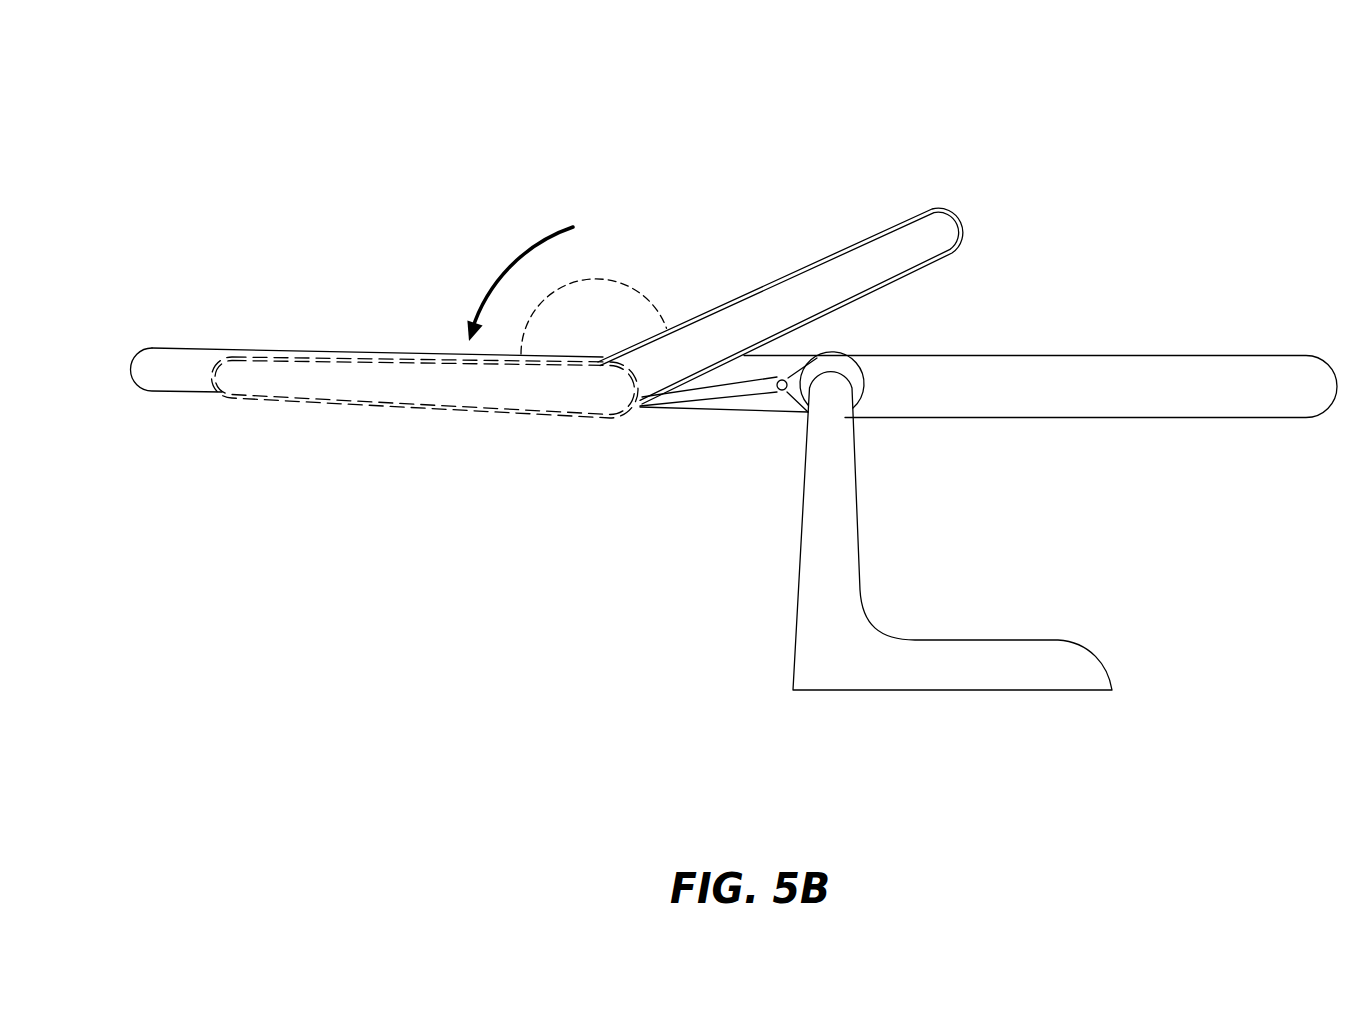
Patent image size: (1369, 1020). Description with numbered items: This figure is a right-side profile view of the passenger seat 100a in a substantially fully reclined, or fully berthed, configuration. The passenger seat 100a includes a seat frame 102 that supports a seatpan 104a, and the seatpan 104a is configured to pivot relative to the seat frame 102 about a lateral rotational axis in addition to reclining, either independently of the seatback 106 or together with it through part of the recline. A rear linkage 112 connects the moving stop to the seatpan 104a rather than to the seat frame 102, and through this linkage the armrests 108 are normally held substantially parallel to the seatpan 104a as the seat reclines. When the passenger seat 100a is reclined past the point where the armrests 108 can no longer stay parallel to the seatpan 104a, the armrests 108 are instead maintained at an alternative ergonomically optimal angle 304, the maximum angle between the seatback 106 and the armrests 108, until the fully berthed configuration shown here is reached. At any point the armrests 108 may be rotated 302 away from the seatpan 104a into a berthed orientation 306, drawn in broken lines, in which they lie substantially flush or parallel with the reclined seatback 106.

The passenger seat 100a is at (203, 114).
The seat frame 102 is at (997, 672).
The seatpan 104a is at (1244, 375).
The seatback 106 is at (195, 377).
The armrests 108 is at (867, 273).
The rear linkage 112 is at (693, 397).
The rotation of the armrests 302 is at (547, 230).
The alternative ergonomically optimal angle 304 is at (628, 287).
The berthed orientation 306 is at (385, 385).